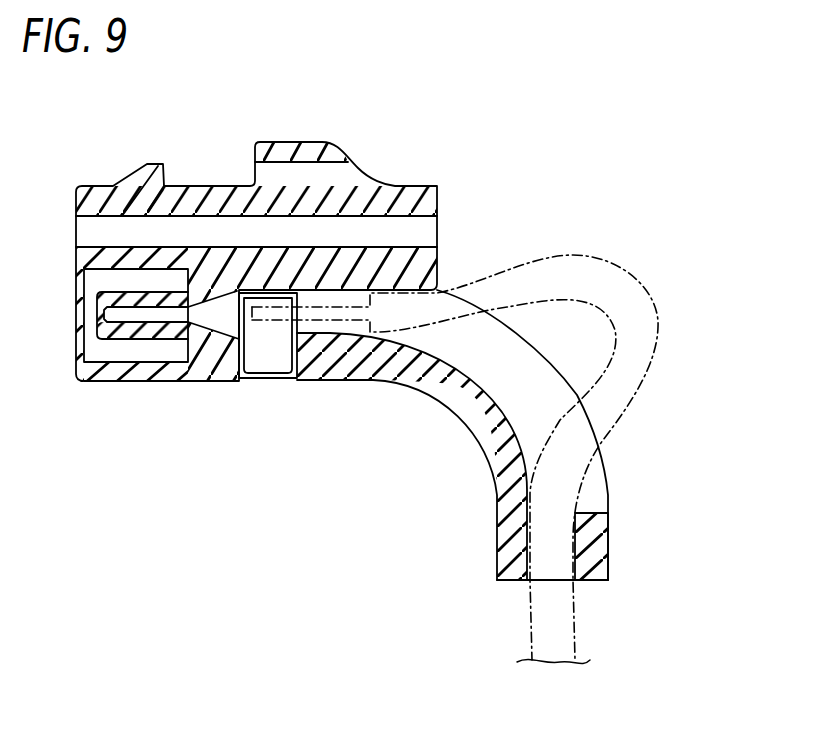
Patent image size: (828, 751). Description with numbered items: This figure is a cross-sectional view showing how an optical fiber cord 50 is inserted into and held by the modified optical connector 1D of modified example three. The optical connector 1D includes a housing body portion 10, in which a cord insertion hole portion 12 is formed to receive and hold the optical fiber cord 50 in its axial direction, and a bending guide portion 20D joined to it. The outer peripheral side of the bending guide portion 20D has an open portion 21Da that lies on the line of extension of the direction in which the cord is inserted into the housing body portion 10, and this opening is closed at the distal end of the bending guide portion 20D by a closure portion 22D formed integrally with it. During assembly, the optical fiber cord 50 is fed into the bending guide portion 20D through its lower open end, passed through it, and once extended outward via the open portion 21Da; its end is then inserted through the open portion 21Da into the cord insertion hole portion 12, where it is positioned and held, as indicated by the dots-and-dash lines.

The optical connector 1D is at (489, 187).
The housing body portion 10 is at (205, 381).
The cord insertion hole portion 12 is at (333, 329).
The bending guide portion 20D is at (483, 452).
The open portion 21Da is at (607, 472).
The closure portion 22D is at (608, 540).
The optical fiber cord 50 is at (658, 322).